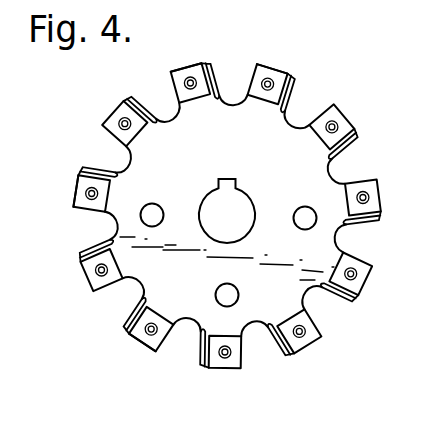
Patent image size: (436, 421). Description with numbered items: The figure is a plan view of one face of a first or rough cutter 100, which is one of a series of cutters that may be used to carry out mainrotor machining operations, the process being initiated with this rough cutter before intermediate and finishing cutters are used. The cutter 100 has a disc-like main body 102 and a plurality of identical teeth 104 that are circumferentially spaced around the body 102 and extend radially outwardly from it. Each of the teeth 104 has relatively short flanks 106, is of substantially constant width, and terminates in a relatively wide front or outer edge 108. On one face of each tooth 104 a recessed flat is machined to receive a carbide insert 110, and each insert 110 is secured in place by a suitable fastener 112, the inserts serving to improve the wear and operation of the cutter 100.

The rough cutter 100 is at (109, 344).
The main body 102 is at (244, 151).
The teeth 104 is at (98, 108).
The flanks 106 is at (156, 118).
The outer edge 108 is at (78, 182).
The carbide insert 110 is at (289, 73).
The fastener 112 is at (267, 68).